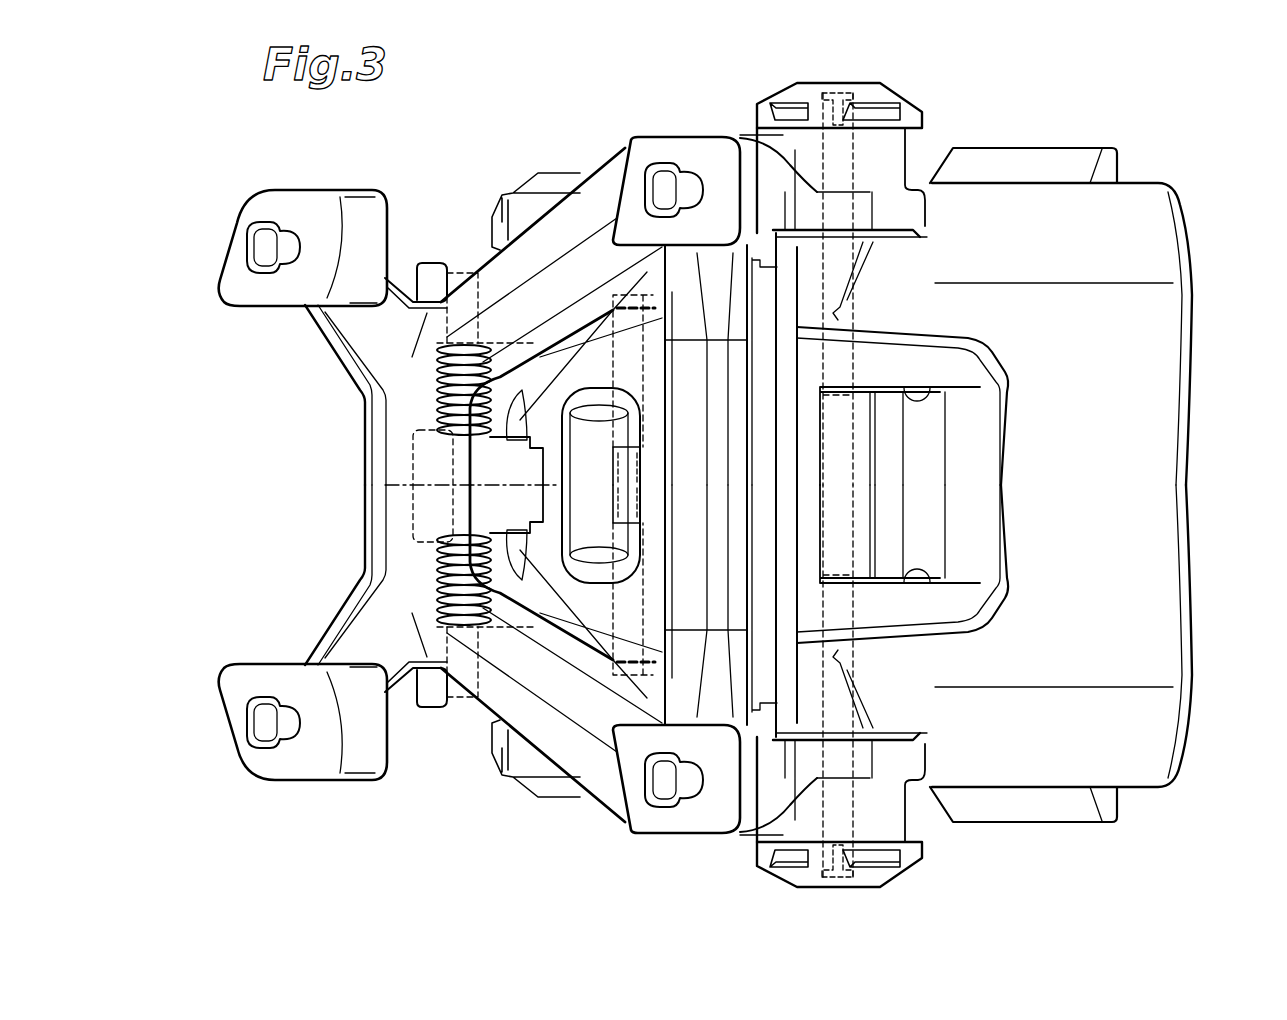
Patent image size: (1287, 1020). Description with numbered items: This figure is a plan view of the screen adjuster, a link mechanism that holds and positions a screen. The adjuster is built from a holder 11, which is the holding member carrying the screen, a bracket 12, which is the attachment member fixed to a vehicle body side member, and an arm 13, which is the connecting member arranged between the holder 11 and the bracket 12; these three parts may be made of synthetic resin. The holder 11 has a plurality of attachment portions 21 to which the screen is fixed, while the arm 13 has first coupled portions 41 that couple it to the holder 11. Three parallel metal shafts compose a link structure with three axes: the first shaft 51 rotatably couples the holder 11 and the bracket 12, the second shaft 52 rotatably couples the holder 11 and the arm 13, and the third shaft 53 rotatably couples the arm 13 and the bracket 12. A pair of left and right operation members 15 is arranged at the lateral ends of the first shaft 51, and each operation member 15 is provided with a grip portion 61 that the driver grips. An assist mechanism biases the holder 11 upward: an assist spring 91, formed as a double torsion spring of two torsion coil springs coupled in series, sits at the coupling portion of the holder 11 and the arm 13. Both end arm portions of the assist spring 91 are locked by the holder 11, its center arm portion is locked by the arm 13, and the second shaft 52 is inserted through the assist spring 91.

The holder 11 is at (365, 532).
The bracket 12 is at (1160, 178).
The arm 13 is at (432, 262).
The operation member 15 is at (772, 88).
The attachment portion 21 is at (252, 212).
The first coupled portion 41 is at (455, 265).
The first shaft 51 is at (858, 448).
The second shaft 52 is at (445, 441).
The third shaft 53 is at (610, 360).
The grip portion 61 is at (882, 110).
The assist spring 91 is at (440, 358).